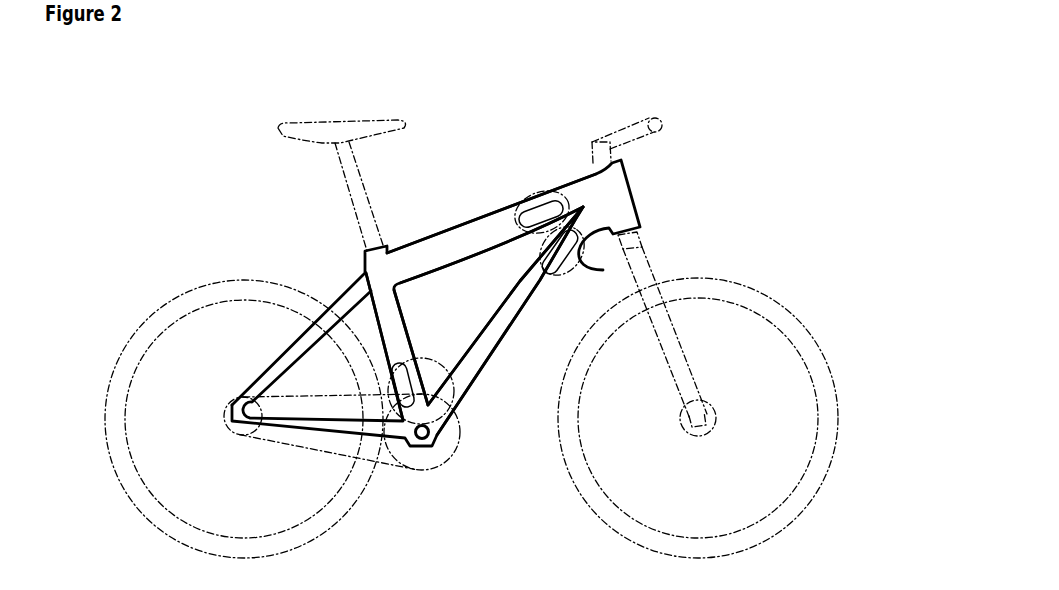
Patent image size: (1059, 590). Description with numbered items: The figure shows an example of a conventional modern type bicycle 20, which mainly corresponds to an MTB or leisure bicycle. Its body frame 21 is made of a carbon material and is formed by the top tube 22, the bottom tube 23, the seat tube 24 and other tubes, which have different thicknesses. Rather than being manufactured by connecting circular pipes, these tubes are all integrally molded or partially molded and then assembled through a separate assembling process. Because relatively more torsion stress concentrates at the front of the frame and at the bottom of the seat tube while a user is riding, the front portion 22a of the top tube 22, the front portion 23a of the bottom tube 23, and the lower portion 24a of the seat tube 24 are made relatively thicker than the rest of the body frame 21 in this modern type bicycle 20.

The modern type bicycle 20 is at (727, 142).
The body frame 21 is at (498, 208).
The top tube 22 is at (458, 237).
The front portion of the top tube 22a is at (541, 185).
The bottom tube 23 is at (507, 320).
The front portion of the bottom tube 23a is at (603, 270).
The seat tube 24 is at (386, 318).
The seat tube joint portion 24a is at (443, 369).